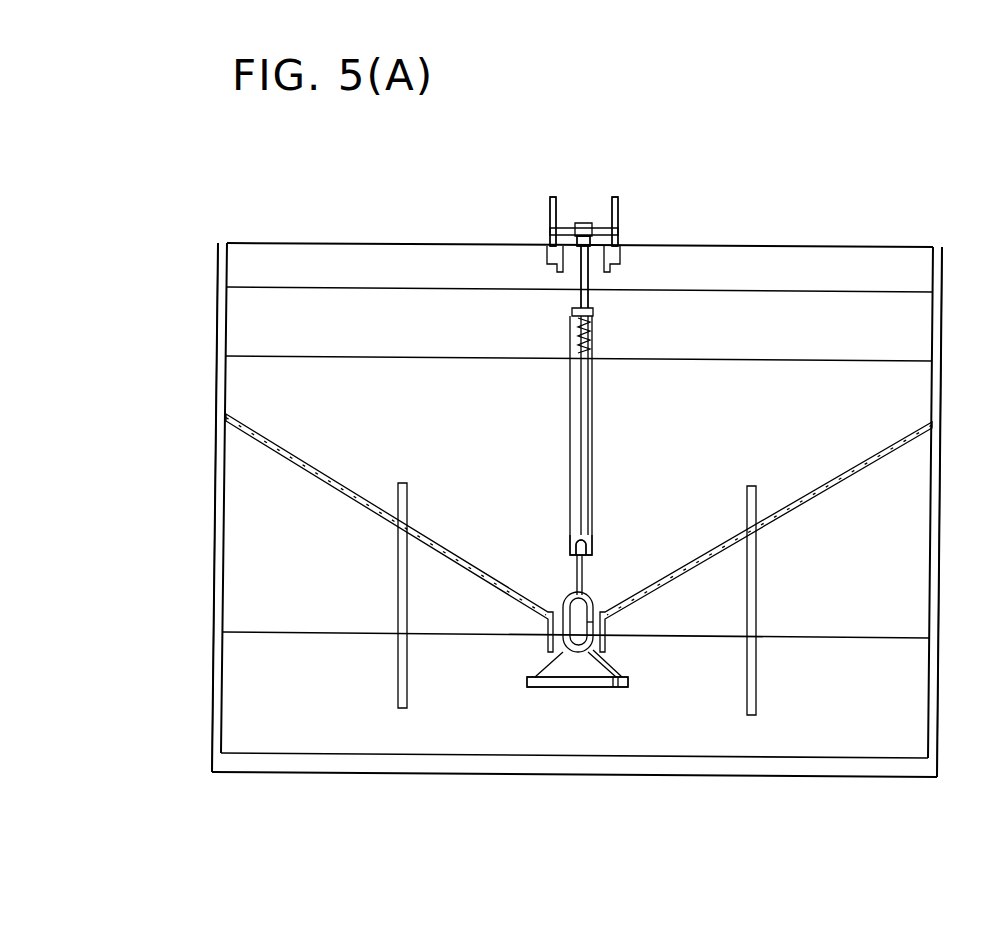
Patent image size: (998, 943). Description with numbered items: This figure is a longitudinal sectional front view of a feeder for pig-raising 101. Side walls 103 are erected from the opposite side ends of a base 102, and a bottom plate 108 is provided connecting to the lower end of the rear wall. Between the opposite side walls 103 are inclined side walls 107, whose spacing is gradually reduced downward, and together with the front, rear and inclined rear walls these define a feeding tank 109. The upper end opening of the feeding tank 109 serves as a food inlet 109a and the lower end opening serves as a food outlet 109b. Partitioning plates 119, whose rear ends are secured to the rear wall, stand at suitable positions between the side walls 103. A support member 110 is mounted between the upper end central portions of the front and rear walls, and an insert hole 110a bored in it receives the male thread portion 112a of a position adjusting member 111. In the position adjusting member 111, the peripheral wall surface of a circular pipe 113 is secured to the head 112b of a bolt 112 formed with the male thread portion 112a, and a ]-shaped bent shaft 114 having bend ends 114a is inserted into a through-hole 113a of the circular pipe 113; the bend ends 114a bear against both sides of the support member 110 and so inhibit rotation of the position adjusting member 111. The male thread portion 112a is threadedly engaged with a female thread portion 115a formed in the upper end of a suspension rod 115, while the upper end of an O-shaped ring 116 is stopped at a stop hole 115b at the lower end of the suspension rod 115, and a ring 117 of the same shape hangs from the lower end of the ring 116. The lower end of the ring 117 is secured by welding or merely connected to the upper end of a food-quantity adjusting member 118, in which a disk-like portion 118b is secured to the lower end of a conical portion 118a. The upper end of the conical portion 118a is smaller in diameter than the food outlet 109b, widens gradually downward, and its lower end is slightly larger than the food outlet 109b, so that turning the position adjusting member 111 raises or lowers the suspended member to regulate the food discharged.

The feeder for pig-raising 101 is at (796, 210).
The base 102 is at (608, 773).
The side walls 103 is at (213, 530).
The inclined side walls 107 is at (335, 488).
The bottom plate 108 is at (310, 740).
The feeding tank 109 is at (300, 262).
The food inlet 109a is at (867, 267).
The food outlet 109b is at (612, 665).
The support member 110 is at (548, 262).
The insert hole 110a is at (617, 276).
The position adjusting member 111 is at (628, 163).
The bolt 112 is at (592, 282).
The male thread portion 112a is at (578, 300).
The head of bolt 112b is at (572, 224).
The circular pipe 113 is at (589, 222).
The through-hole 113a is at (594, 222).
The bent shaft 114 is at (548, 200).
The bend ends 114a is at (548, 222).
The suspension rod 115 is at (570, 430).
The female thread portion 115a is at (603, 342).
The stop hole 115b is at (568, 548).
The O-shaped ring 116 is at (586, 568).
The ring 117 is at (550, 622).
The food-quantity adjusting member 118 is at (607, 688).
The conical portion 118a is at (548, 668).
The disk-like portion 118b is at (540, 688).
The partitioning plates 119 is at (397, 595).